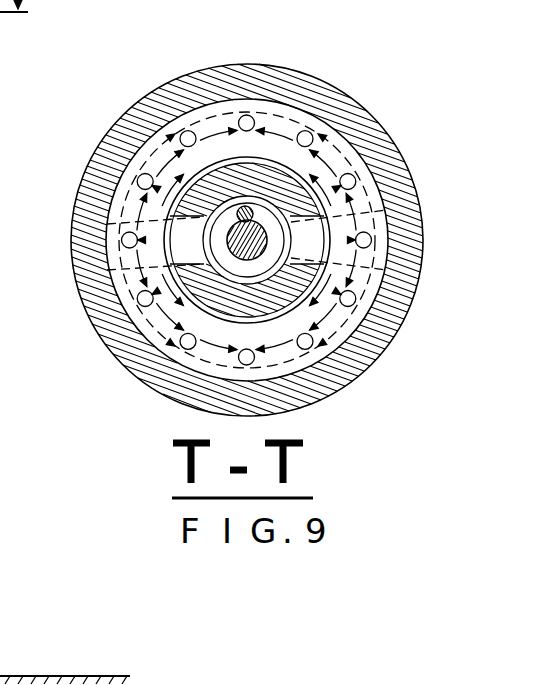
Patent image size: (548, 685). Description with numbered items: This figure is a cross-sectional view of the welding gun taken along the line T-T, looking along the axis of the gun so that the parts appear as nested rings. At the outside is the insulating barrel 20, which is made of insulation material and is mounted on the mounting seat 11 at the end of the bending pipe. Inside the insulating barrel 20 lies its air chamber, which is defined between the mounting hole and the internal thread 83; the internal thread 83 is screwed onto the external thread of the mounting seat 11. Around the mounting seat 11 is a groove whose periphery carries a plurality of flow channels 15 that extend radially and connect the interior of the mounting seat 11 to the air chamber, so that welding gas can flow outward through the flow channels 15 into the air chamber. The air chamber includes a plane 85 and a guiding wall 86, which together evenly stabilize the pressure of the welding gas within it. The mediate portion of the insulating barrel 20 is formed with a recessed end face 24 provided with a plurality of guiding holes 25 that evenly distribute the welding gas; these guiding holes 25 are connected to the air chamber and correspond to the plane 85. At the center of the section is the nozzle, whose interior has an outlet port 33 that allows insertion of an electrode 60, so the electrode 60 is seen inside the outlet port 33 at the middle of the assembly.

The insulating barrel 20 is at (252, 78).
The guiding wall 86 is at (340, 347).
The plane 85 is at (362, 195).
The guiding holes 25 is at (121, 241).
The recessed end face 24 is at (204, 355).
The internal thread 83 is at (320, 265).
The flow channels 15 is at (178, 228).
The mounting seat 11 is at (262, 303).
The electrode 60 is at (262, 233).
The outlet port 33 is at (233, 233).